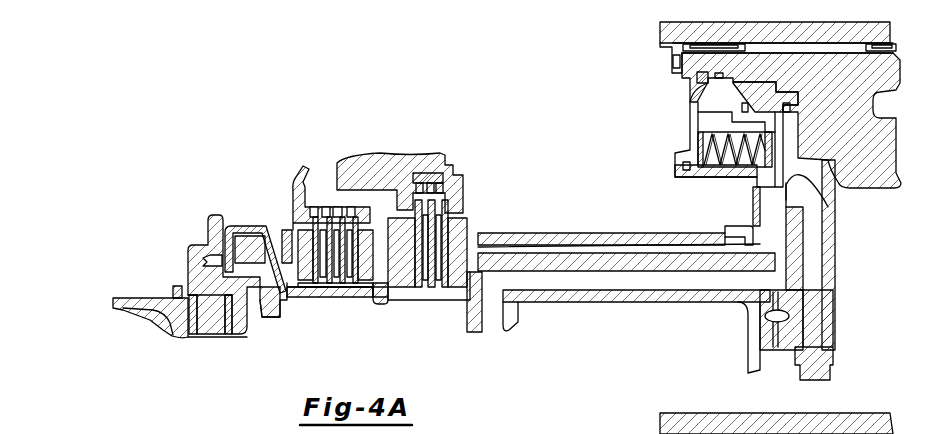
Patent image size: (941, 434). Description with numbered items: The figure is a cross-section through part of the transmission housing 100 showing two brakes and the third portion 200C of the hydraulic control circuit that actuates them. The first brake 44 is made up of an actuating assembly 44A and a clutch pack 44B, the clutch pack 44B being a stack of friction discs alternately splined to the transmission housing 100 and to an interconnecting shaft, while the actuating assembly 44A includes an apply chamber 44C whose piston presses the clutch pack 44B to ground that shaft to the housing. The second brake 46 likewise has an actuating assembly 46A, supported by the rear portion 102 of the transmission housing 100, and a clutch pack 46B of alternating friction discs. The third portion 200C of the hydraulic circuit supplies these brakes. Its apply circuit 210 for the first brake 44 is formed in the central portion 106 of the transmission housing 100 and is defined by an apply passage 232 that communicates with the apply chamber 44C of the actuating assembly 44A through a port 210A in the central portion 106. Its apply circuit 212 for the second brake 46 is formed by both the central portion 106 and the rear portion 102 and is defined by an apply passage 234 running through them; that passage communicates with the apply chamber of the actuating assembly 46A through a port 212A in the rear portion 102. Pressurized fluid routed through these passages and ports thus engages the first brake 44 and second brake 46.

The transmission housing 100 is at (862, 296).
The rear portion of the transmission housing 102 is at (893, 182).
The central portion of the transmission housing 106 is at (285, 305).
The first brake 44 is at (340, 198).
The actuating assembly 44A is at (278, 190).
The clutch pack 44B is at (329, 172).
The apply chamber 44C is at (228, 226).
The second brake 46 is at (581, 186).
The actuating assembly 46A is at (713, 201).
The clutch pack 46B is at (496, 208).
The third portion of the hydraulic circuit 200C is at (398, 322).
The apply circuit for the first brake 210 is at (186, 313).
The port 210A is at (205, 260).
The apply circuit for the second brake 212 is at (486, 340).
The port 212A is at (829, 198).
The apply passage 232 is at (217, 338).
The apply passage 234 is at (498, 320).